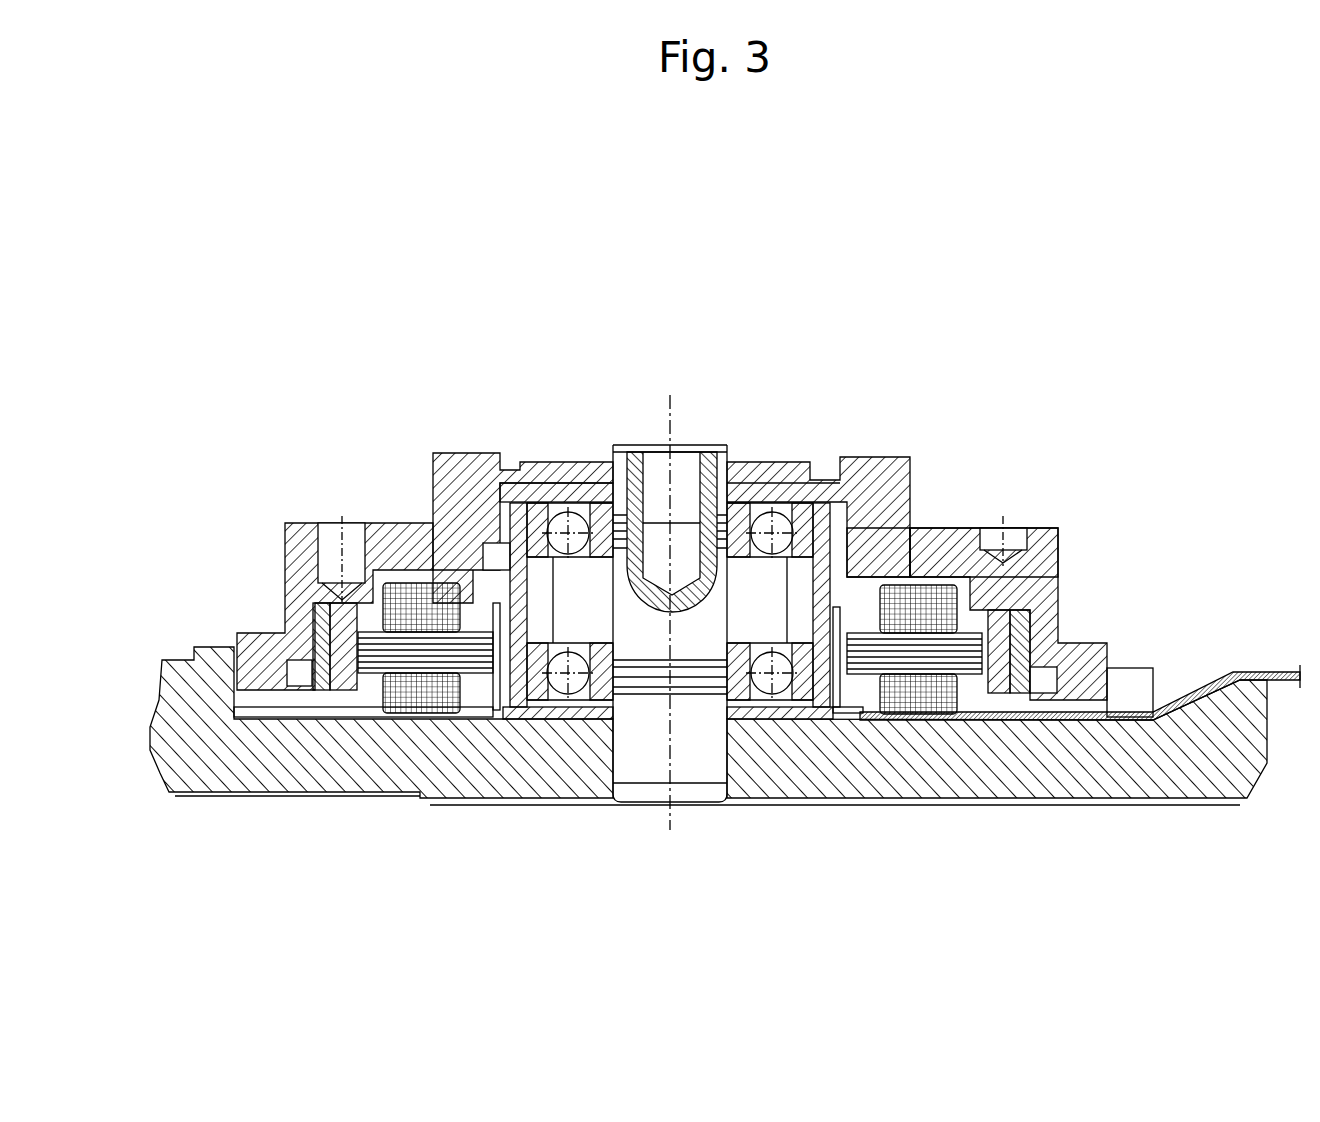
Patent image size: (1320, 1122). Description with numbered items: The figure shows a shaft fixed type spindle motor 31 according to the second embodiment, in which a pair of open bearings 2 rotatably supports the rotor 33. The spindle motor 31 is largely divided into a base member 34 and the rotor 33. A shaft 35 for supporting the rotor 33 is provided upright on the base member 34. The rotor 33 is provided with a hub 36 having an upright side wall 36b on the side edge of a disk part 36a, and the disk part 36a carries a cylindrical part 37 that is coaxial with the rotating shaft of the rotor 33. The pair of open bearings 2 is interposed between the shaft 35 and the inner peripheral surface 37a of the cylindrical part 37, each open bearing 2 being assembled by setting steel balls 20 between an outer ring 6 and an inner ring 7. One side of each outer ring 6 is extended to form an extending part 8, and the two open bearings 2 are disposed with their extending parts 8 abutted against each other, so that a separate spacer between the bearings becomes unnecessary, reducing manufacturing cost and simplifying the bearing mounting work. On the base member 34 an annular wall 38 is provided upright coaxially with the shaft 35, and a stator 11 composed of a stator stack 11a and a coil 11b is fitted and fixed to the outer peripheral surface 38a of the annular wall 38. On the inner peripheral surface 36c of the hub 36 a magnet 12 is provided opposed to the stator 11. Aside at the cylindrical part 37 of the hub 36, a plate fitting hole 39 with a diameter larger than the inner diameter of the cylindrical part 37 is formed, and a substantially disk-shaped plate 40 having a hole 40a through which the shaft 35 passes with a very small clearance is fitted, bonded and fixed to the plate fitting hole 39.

The open bearing 2 is at (805, 500).
The outer ring 6 is at (518, 545).
The inner ring 7 is at (745, 510).
The extending part 8 is at (897, 550).
The stator 11 is at (430, 717).
The stator stack 11a is at (370, 670).
The coil 11b is at (400, 712).
The magnet 12 is at (345, 690).
The steel balls 20 is at (578, 592).
The spindle motor 31 is at (974, 368).
The rotor 33 is at (293, 515).
The base member 34 is at (1140, 810).
The shaft 35 is at (652, 765).
The hub 36 is at (1053, 512).
The disk part 36a is at (885, 500).
The upright side wall 36b is at (1040, 578).
The inner peripheral surface 36c is at (1053, 632).
The cylindrical part 37 is at (820, 718).
The inner peripheral surface 37a is at (785, 718).
The annular wall 38 is at (515, 600).
The outer peripheral surface 38a is at (460, 715).
The plate fitting hole 39 is at (527, 472).
The plate 40 is at (550, 480).
The hole 40a is at (617, 445).